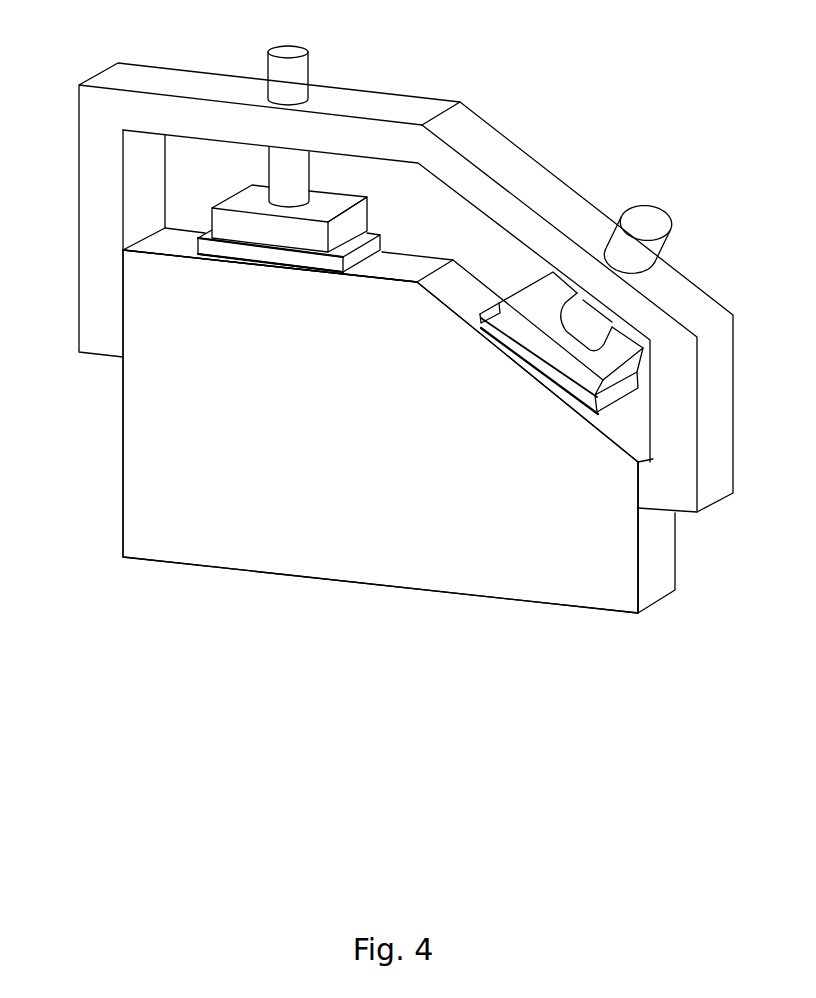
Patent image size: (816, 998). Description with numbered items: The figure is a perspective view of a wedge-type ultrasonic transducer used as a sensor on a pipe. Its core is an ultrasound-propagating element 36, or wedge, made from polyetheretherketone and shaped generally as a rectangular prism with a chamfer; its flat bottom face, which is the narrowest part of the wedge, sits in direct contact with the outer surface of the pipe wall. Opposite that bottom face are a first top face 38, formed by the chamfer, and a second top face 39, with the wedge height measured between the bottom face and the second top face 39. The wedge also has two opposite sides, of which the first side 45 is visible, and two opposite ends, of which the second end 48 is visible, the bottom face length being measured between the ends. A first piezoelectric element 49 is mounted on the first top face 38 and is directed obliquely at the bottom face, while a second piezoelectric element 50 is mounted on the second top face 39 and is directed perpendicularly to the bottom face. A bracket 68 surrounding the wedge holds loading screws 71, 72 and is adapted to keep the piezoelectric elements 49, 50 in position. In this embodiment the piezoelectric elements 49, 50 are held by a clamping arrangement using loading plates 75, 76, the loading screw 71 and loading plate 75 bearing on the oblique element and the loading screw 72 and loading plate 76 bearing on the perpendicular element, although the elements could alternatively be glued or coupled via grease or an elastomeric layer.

The ultrasound-propagating element 36 is at (123, 438).
The first top face 38 is at (467, 283).
The second top face 39 is at (172, 238).
The first side 45 is at (153, 500).
The second end 48 is at (641, 588).
The first piezoelectric element 49 is at (510, 354).
The second piezoelectric element 50 is at (290, 258).
The bracket 68 is at (79, 288).
The loading screw 71 is at (649, 206).
The loading screw 72 is at (288, 47).
The loading plate 75 is at (564, 376).
The loading plate 76 is at (242, 233).